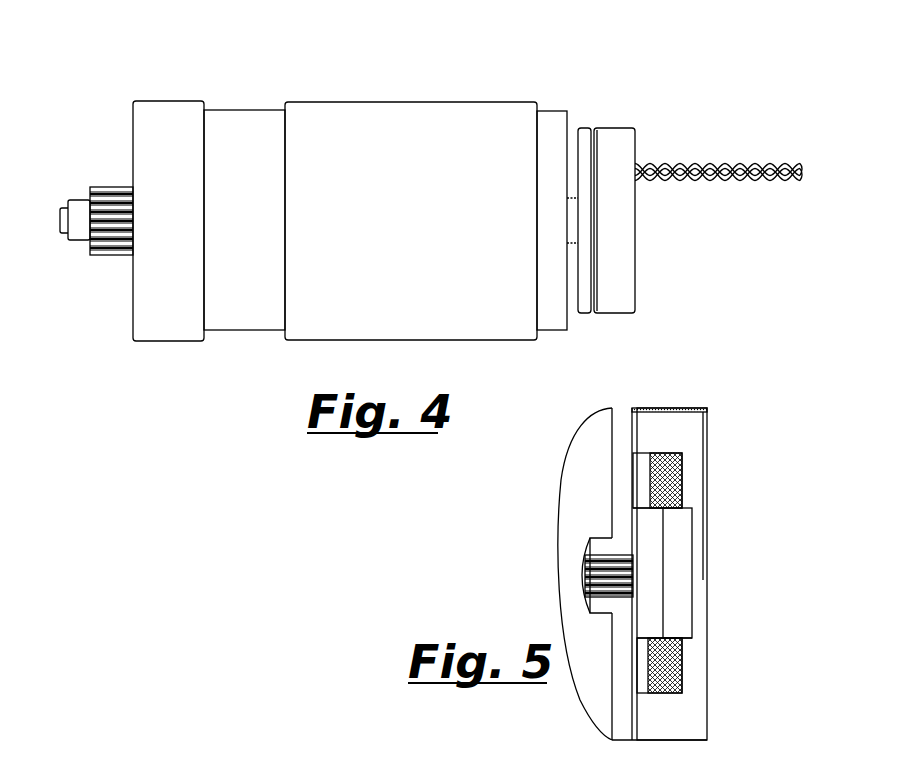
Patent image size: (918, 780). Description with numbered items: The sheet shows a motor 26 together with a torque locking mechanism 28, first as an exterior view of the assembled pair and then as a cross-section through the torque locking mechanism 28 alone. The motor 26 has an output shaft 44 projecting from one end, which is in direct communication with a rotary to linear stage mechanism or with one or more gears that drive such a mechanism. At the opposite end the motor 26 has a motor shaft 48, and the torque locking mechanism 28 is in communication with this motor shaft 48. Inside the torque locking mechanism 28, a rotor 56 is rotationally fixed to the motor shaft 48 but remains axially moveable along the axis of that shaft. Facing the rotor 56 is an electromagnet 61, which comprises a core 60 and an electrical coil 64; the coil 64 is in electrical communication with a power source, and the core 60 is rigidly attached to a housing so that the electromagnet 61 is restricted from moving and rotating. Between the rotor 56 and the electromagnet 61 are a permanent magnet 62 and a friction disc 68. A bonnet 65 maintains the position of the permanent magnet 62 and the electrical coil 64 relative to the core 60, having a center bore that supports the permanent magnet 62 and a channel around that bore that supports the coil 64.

In FIG. 4, the motor 26 is at (244, 92).
In FIG. 4, the torque locking mechanism 28 is at (617, 112).
In FIG. 5, the torque locking mechanism 28 is at (653, 542).
In FIG. 4, the output shaft 44 is at (78, 223).
In FIG. 4, the motor shaft 48 is at (572, 223).
In FIG. 5, the rotor 56 is at (572, 481).
In FIG. 5, the core 60 is at (680, 718).
In FIG. 5, the electromagnet 61 is at (676, 434).
In FIG. 5, the permanent magnet 62 is at (677, 580).
In FIG. 5, the electrical coil 64 is at (667, 480).
In FIG. 5, the bonnet 65 is at (677, 640).
In FIG. 5, the friction disc 68 is at (637, 658).